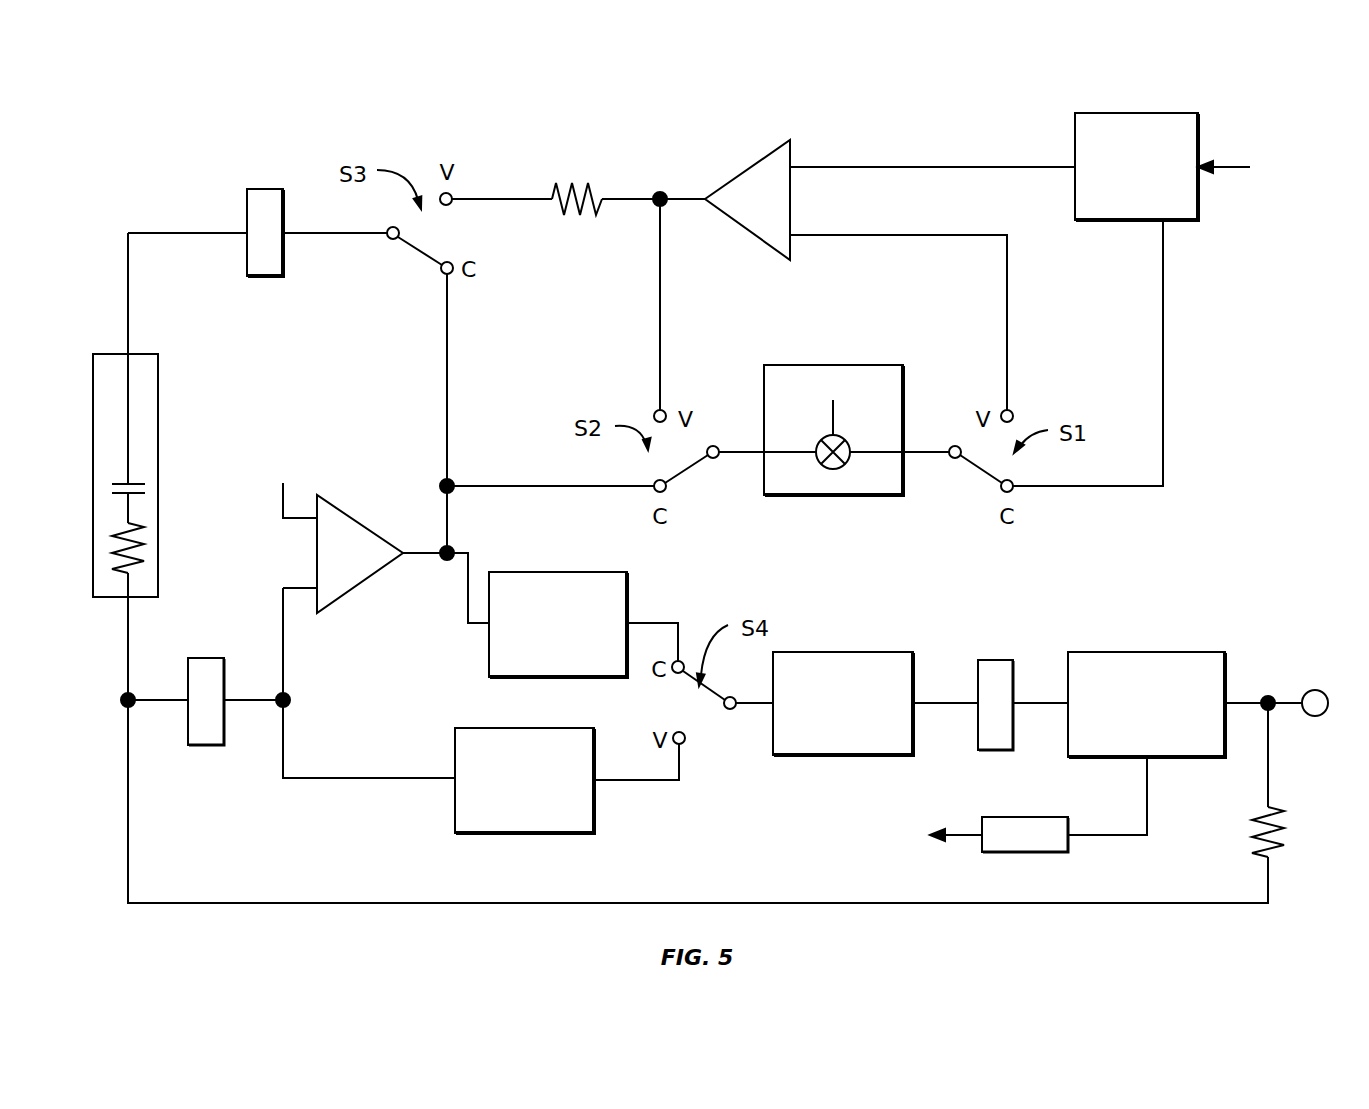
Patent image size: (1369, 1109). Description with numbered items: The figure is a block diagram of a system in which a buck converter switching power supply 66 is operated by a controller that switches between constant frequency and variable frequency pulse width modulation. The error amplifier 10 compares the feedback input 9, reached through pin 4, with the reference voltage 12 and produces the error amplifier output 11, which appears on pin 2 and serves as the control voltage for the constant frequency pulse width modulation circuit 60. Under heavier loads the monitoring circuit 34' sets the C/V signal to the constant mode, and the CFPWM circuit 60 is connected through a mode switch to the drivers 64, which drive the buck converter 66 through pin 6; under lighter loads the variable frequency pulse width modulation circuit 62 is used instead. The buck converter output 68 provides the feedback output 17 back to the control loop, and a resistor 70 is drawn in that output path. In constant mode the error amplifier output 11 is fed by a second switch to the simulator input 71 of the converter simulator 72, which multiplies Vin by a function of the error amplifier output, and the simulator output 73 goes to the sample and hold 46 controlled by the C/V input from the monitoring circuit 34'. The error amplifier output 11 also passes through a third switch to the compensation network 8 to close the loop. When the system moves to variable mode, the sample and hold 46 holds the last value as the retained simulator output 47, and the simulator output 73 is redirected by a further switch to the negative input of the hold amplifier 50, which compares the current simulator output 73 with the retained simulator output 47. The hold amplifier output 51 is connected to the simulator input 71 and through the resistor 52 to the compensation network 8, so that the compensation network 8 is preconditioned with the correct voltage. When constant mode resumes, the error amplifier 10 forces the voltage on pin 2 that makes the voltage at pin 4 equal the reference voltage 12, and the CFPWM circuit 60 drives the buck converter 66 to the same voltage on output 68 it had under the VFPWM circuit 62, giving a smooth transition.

The pin 2 is at (247, 210).
The pin 4 is at (188, 658).
The pin 6 is at (978, 740).
The compensation network 8 is at (93, 353).
The feedback input 9 is at (283, 615).
The error amplifier 10 is at (350, 513).
The error amplifier output 11 is at (447, 528).
The reference voltage 12 is at (282, 448).
The feedback output 17 is at (1268, 880).
The monitoring circuit 34' is at (984, 854).
The sample and hold 46 is at (1198, 128).
The retained simulator output 47 is at (963, 165).
The hold amplifier 50 is at (760, 240).
The hold amplifier output 51 is at (660, 285).
The resistor 52 is at (573, 190).
The constant frequency pulse width modulation circuit 60 is at (567, 572).
The variable frequency pulse width modulation circuit 62 is at (455, 805).
The drivers 64 is at (878, 652).
The buck converter switching power supply 66 is at (1113, 652).
The buck converter output 68 is at (1310, 690).
The output resistor 70 is at (1262, 815).
The simulator input 71 is at (748, 455).
The converter simulator 72 is at (905, 390).
The simulator output 73 is at (920, 455).